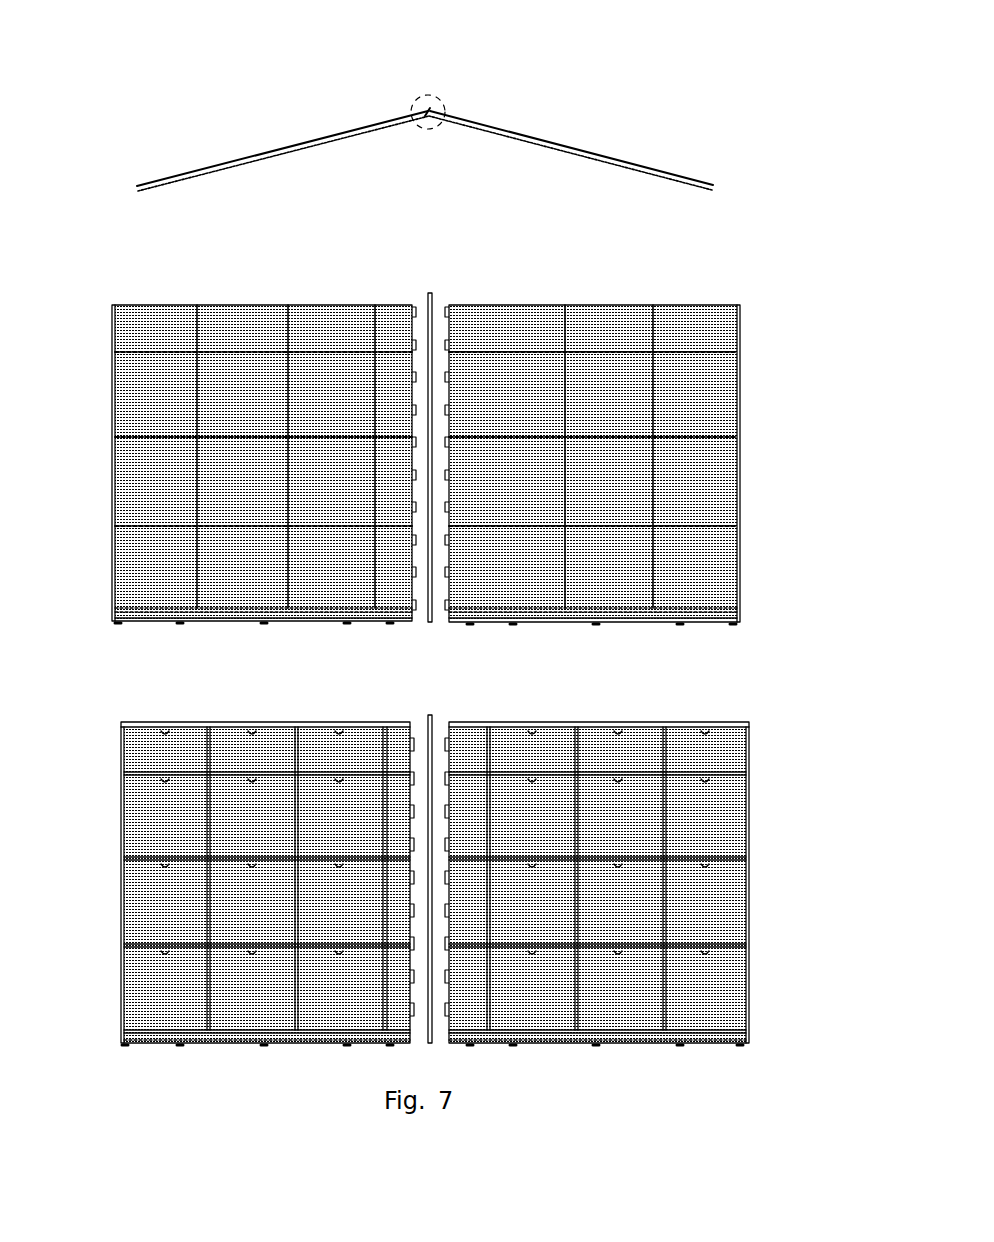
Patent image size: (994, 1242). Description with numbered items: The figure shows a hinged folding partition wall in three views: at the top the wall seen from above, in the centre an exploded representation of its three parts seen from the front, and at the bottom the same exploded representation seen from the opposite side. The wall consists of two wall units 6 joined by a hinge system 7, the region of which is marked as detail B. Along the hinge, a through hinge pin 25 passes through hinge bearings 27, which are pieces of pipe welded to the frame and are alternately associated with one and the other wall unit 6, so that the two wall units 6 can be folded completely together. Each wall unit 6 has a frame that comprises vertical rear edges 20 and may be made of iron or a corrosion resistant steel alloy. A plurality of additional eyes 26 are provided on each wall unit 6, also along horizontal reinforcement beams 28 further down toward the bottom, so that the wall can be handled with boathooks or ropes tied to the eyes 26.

The wall unit 6 is at (206, 167).
The hinge system 7 is at (428, 113).
The detail B is at (448, 100).
The vertical rear edge 20 is at (110, 457).
The hinge pin 25 is at (428, 295).
The eye 26 is at (252, 738).
The hinge bearing 27 is at (412, 306).
The horizontal reinforcement beam 28 is at (129, 352).